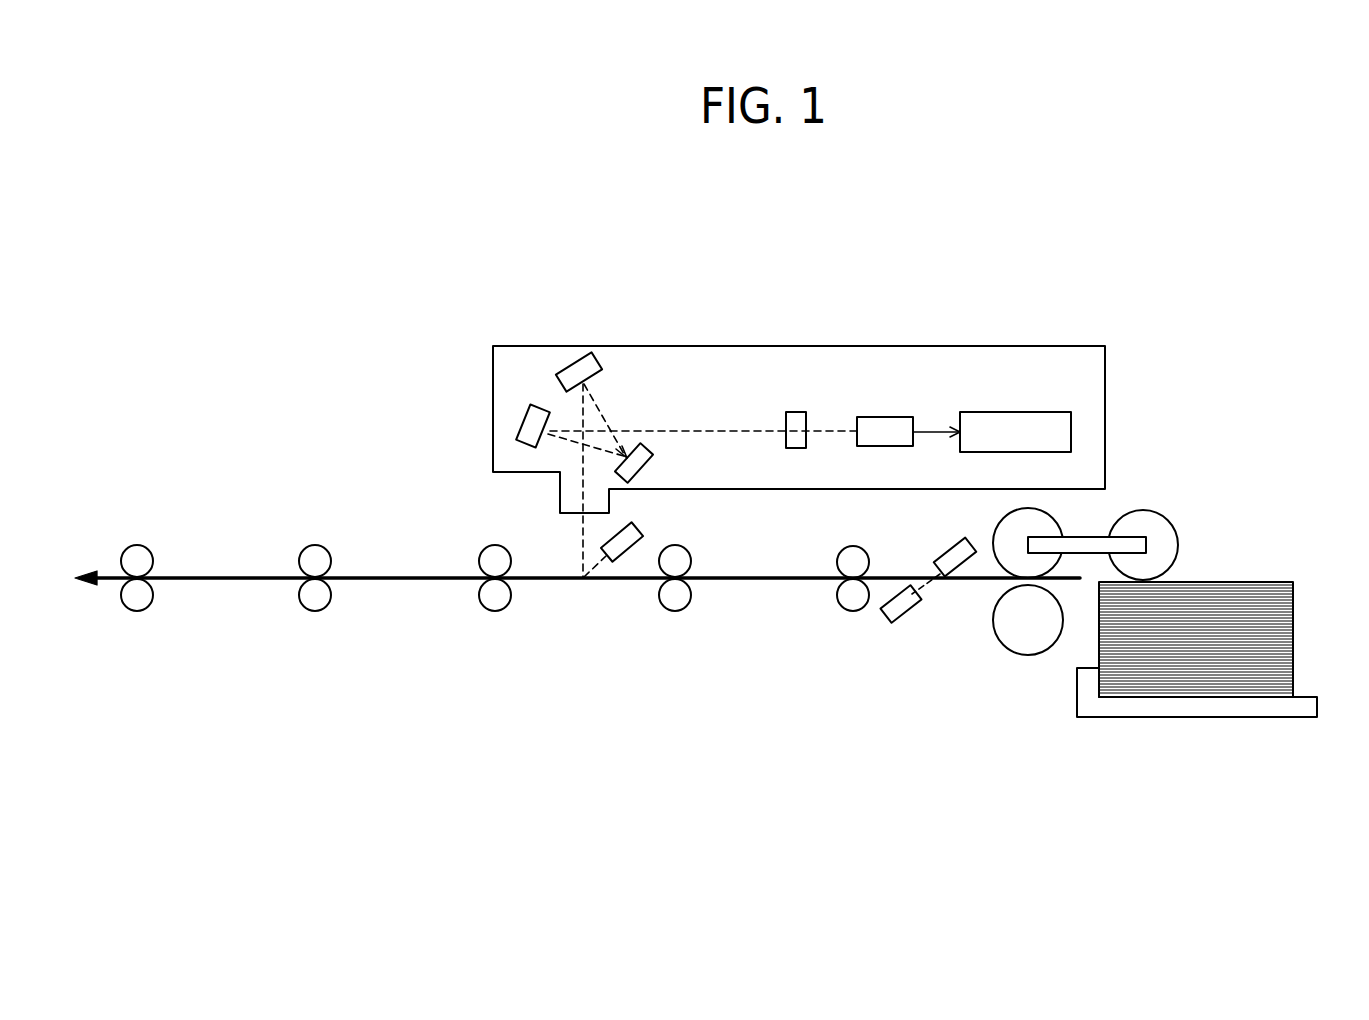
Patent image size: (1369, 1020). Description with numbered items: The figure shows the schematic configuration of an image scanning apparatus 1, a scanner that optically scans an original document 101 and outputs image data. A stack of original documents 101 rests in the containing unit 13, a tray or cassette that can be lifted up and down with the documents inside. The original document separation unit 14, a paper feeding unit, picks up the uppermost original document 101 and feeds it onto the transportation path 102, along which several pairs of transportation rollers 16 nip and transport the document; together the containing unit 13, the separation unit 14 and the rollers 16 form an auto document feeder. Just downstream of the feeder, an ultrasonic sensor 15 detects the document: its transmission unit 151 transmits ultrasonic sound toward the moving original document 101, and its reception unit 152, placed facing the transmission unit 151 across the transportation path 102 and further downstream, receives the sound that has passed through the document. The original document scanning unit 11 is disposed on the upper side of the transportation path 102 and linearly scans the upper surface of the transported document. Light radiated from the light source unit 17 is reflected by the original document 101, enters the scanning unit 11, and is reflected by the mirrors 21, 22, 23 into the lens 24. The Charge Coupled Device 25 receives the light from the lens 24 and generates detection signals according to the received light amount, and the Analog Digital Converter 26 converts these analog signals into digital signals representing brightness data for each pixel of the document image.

The image scanning apparatus 1 is at (1144, 251).
The original document scanning unit 11 is at (1055, 346).
The containing unit 13 is at (1306, 697).
The original document separation unit 14 is at (1173, 521).
The ultrasonic sensor 15 is at (930, 627).
The transmission unit 151 is at (966, 565).
The reception unit 152 is at (905, 635).
The transportation rollers 16 is at (860, 550).
The light source unit 17 is at (638, 530).
The mirror 21 is at (574, 363).
The mirror 22 is at (648, 463).
The mirror 23 is at (523, 417).
The lens 24 is at (800, 412).
The Charge Coupled Device 25 is at (891, 417).
The Analog Digital Converter 26 is at (1046, 412).
The original document 101 is at (1254, 582).
The transportation path 102 is at (217, 575).